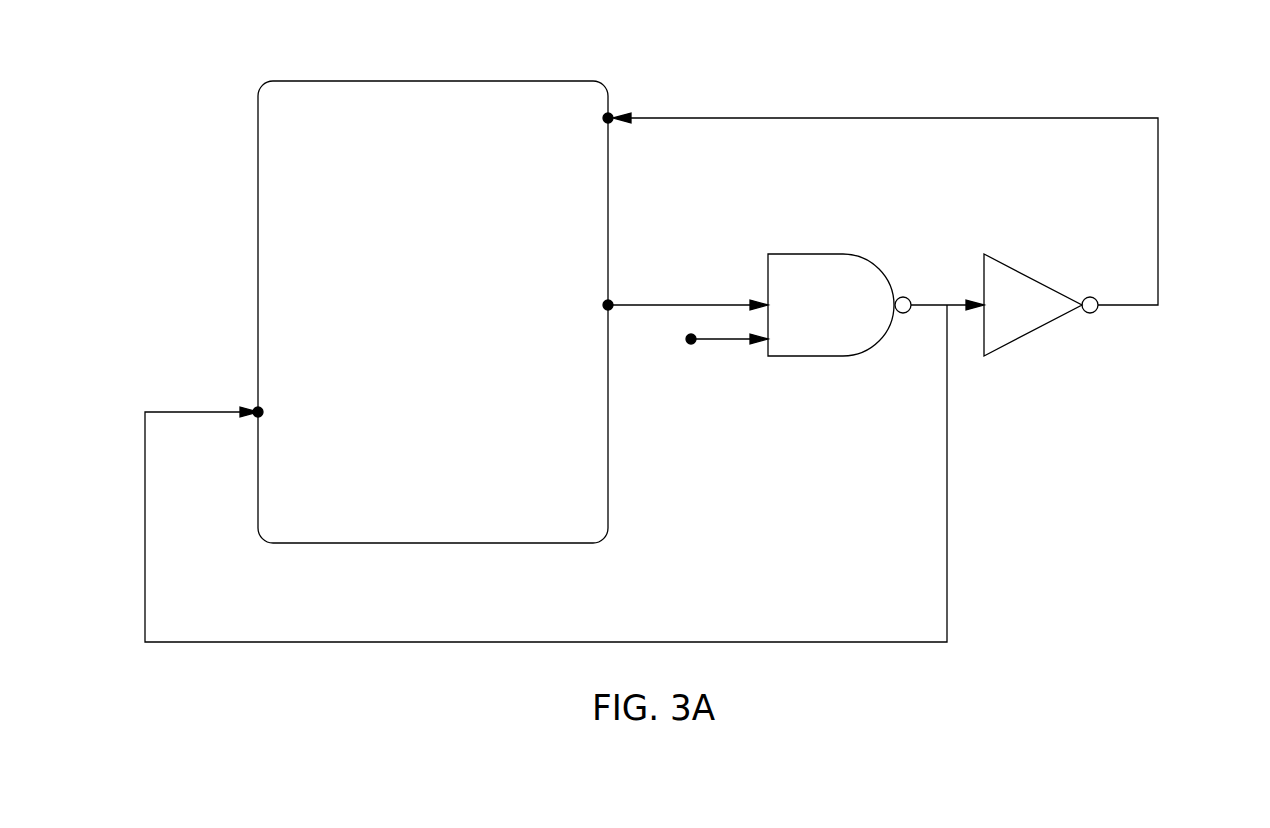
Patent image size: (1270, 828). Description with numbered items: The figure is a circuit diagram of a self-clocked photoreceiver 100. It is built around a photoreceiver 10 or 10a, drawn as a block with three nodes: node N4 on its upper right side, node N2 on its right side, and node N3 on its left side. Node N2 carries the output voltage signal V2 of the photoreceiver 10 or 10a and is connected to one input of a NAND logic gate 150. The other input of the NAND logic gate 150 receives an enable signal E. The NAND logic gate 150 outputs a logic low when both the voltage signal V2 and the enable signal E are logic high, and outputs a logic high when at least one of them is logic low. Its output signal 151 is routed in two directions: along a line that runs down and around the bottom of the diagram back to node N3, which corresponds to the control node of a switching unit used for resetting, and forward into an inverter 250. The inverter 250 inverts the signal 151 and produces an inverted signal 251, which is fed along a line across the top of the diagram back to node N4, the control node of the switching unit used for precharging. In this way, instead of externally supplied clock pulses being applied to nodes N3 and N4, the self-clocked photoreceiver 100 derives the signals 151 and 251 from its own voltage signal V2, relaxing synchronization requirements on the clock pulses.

The self-clocked photoreceiver 100 is at (1112, 63).
The photoreceiver 10 is at (433, 296).
The photoreceiver 10a is at (432, 80).
The node N4 is at (632, 94).
The node N2 is at (626, 290).
The node N3 is at (237, 388).
The enable signal E is at (720, 358).
The NAND logic gate 150 is at (862, 262).
The output signal 151 is at (948, 421).
The inverter 250 is at (1040, 278).
The inverted signal 251 is at (951, 118).